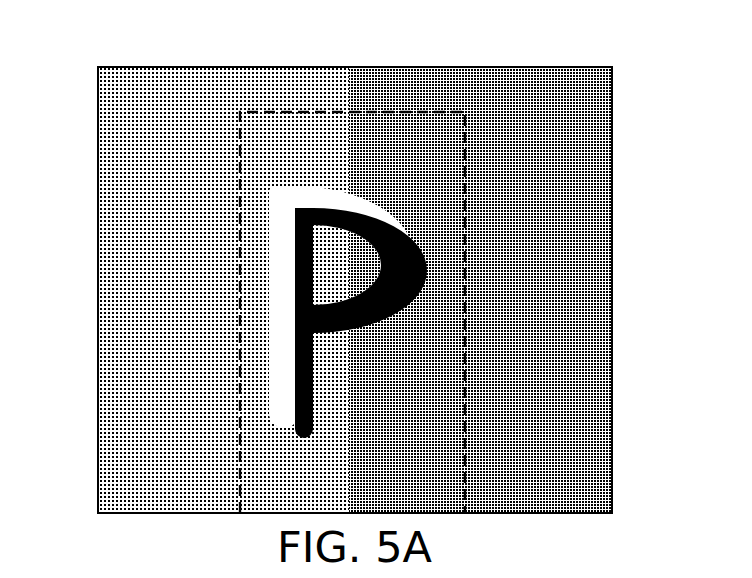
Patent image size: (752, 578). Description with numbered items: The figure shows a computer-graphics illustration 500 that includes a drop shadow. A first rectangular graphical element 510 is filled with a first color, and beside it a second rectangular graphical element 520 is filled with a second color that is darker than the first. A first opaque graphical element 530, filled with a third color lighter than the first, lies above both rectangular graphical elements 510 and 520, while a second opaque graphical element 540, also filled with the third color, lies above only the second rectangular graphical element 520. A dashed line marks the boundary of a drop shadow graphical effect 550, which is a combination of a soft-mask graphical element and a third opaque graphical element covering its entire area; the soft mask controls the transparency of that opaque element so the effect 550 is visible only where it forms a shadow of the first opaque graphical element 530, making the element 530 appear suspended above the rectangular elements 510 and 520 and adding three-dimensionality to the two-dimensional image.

The illustration 500 is at (397, 54).
The first rectangular graphical element 510 is at (98, 143).
The second rectangular graphical element 520 is at (612, 143).
The first opaque graphical element 530 is at (273, 323).
The second opaque graphical element 540 is at (481, 380).
The drop shadow graphical effect 550 is at (238, 482).